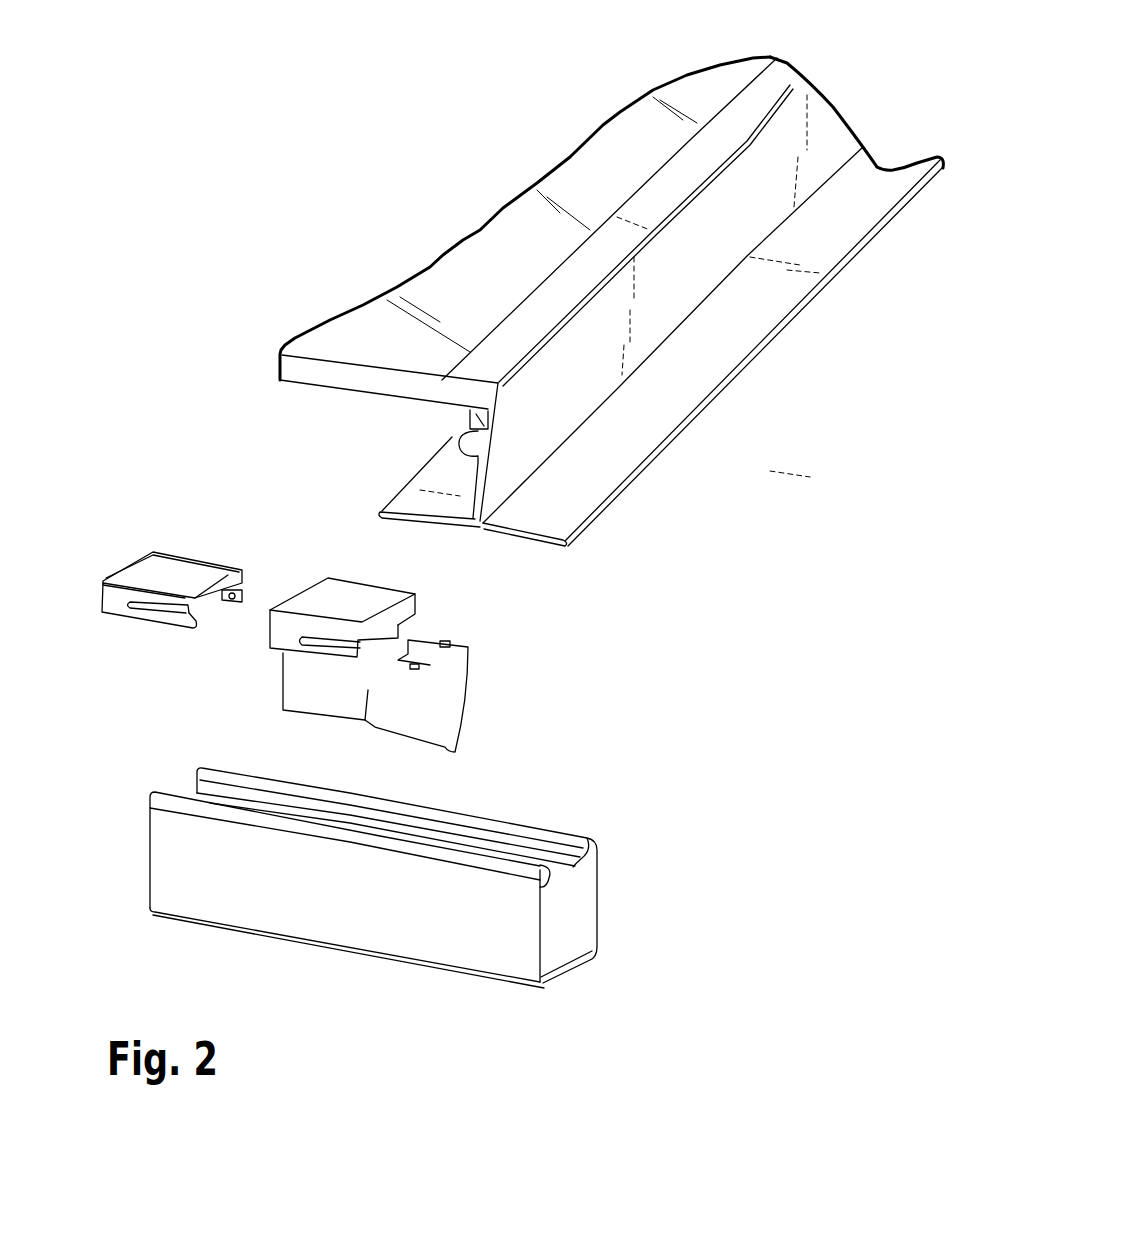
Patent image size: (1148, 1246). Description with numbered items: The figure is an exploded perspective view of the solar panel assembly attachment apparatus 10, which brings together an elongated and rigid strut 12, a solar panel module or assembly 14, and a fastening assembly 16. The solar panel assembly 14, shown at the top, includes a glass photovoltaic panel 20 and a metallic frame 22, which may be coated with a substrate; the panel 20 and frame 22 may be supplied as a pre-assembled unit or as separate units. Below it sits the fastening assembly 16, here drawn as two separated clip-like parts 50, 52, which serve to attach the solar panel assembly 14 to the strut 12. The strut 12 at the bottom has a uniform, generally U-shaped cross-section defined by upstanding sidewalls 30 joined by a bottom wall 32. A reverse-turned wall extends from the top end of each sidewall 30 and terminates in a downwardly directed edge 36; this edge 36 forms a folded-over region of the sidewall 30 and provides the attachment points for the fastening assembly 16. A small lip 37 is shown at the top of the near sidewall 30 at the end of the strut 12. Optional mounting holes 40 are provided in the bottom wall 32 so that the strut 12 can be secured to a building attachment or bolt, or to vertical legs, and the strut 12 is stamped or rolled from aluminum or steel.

The solar panel assembly attachment apparatus 10 is at (611, 277).
The glass photovoltaic panel 20 is at (528, 218).
The solar panel module or assembly 14 is at (780, 83).
The metallic frame 22 is at (820, 130).
The fastening assembly 16 is at (285, 599).
The clip 50 is at (275, 537).
The spring clip 52 is at (172, 546).
The strut 12 is at (364, 878).
The upstanding sidewall 30 is at (347, 894).
The bottom wall 32 is at (584, 955).
The downwardly directed edge 36 is at (565, 856).
The front lip 37 is at (494, 938).
The mounting hole 40 is at (553, 965).